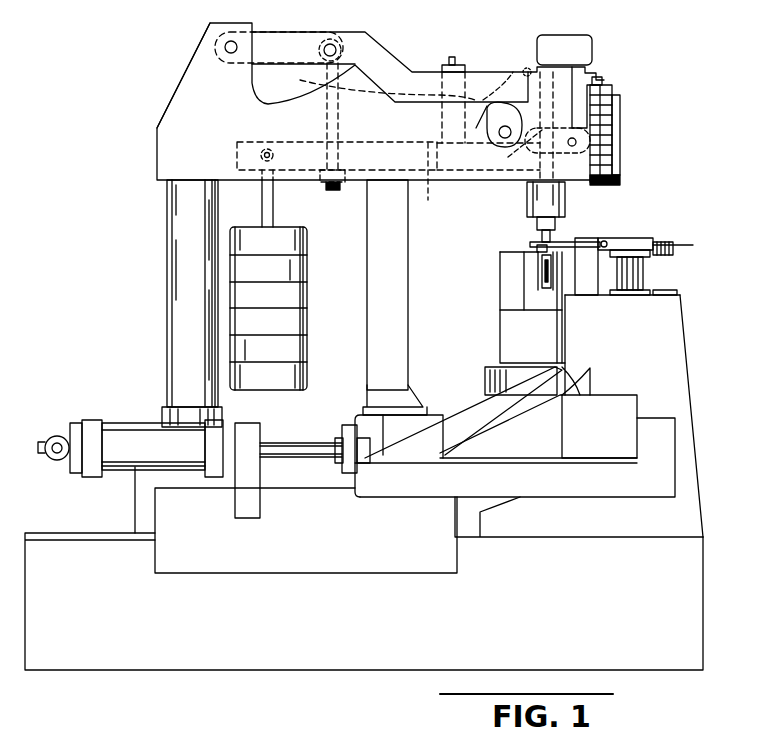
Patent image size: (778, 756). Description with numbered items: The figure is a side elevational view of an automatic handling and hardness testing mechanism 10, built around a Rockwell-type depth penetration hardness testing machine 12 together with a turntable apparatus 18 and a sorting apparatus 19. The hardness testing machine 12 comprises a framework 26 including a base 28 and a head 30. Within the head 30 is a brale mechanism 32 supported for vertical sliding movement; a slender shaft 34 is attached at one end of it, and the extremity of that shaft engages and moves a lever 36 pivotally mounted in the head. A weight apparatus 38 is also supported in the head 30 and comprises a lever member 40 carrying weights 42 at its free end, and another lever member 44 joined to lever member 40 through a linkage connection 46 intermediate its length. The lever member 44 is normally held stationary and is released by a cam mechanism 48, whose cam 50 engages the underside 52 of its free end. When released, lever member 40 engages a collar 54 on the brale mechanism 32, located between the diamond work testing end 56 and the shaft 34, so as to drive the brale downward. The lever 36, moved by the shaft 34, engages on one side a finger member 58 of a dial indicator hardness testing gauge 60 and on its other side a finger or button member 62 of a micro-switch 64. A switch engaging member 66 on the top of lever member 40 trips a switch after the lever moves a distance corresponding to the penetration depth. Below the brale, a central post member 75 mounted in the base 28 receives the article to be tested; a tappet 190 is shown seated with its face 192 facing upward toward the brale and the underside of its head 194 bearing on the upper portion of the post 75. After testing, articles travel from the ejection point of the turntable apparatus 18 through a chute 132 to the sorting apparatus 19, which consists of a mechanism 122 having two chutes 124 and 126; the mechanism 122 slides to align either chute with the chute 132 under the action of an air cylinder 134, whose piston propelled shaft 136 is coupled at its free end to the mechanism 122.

The automatic handling and hardness testing mechanism 10 is at (195, 52).
The depth penetration hardness testing machine 12 is at (172, 152).
The head 30 is at (200, 113).
The lever member 44 is at (363, 50).
The linkage connection 46 is at (327, 78).
The weight apparatus 38 is at (253, 152).
The switch engaging member 66 is at (455, 64).
The cam mechanism 48 is at (502, 118).
The underside 52 is at (494, 124).
The cam 50 is at (497, 128).
The slender shaft 34 is at (540, 131).
The lever 36 is at (527, 68).
The lever member 40 is at (400, 279).
The micro-switch 64 is at (570, 45).
The finger or button member 62 is at (595, 70).
The finger member 58 is at (600, 82).
The dial indicator hardness testing gauge 60 is at (612, 131).
The collar 54 is at (552, 172).
The brale mechanism 32 is at (567, 202).
The diamond work testing end 56 is at (558, 242).
The face of the tappet 192 is at (540, 245).
The head of the tappet 194 is at (500, 253).
The tappet 190 is at (550, 267).
The central post member 75 is at (532, 300).
The turntable apparatus 18 is at (664, 242).
The chute 132 is at (550, 336).
The sorting mechanism 122 is at (542, 441).
The chute 126 is at (612, 398).
The chute 124 is at (410, 445).
The sorting apparatus 19 is at (463, 467).
The base 28 is at (150, 487).
The framework 26 is at (185, 323).
The weights 42 is at (280, 298).
The air cylinder 134 is at (122, 445).
The piston propelled shaft 136 is at (300, 448).